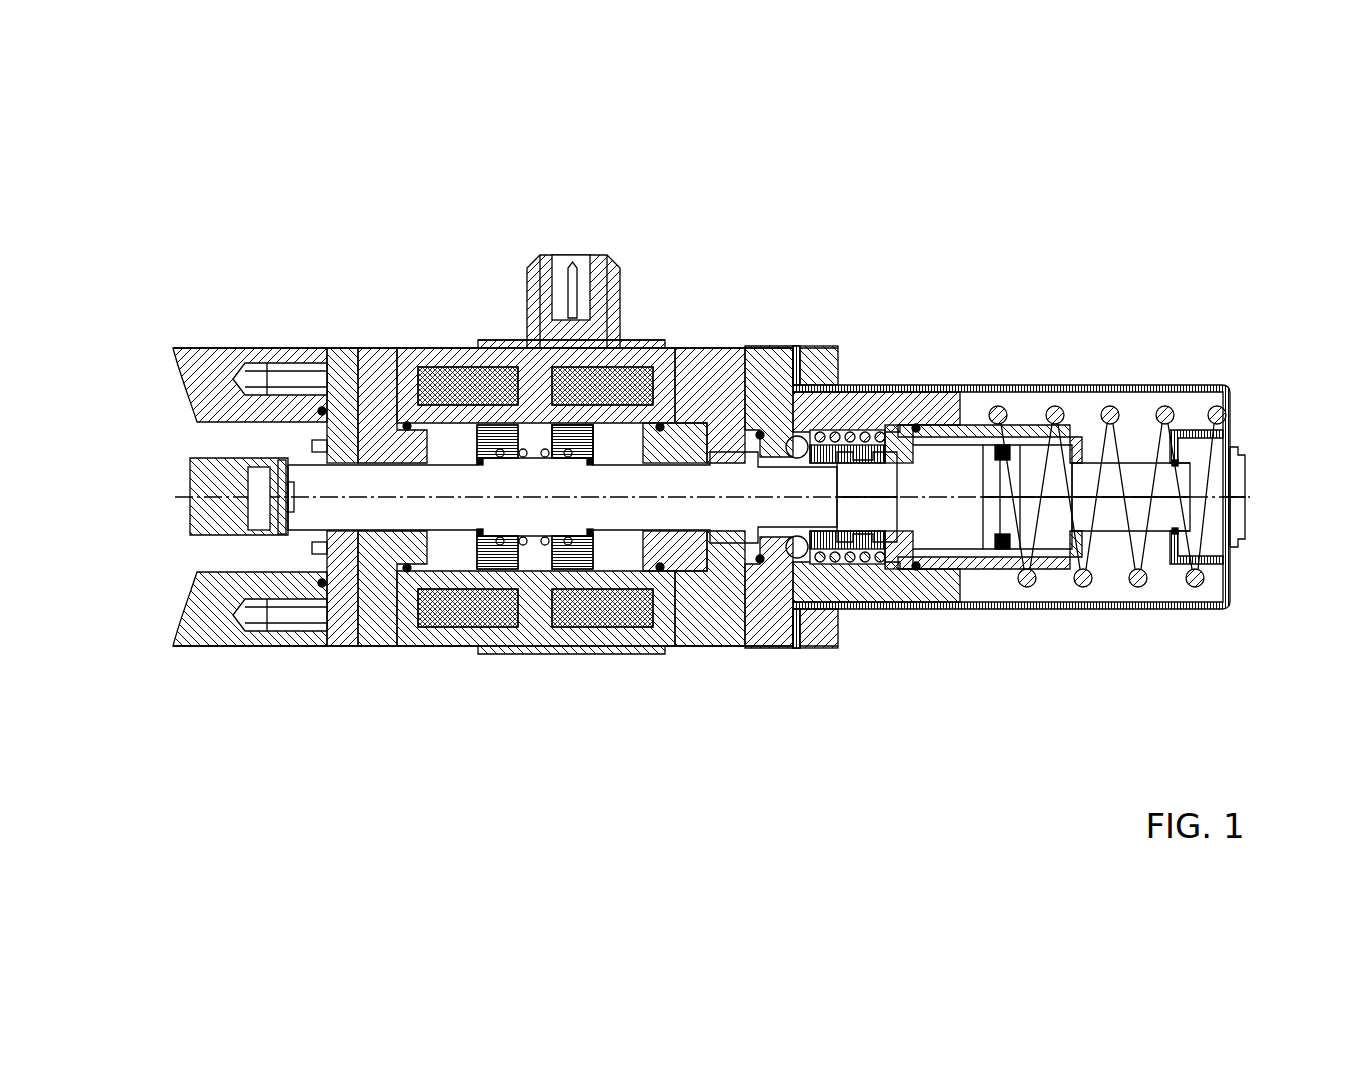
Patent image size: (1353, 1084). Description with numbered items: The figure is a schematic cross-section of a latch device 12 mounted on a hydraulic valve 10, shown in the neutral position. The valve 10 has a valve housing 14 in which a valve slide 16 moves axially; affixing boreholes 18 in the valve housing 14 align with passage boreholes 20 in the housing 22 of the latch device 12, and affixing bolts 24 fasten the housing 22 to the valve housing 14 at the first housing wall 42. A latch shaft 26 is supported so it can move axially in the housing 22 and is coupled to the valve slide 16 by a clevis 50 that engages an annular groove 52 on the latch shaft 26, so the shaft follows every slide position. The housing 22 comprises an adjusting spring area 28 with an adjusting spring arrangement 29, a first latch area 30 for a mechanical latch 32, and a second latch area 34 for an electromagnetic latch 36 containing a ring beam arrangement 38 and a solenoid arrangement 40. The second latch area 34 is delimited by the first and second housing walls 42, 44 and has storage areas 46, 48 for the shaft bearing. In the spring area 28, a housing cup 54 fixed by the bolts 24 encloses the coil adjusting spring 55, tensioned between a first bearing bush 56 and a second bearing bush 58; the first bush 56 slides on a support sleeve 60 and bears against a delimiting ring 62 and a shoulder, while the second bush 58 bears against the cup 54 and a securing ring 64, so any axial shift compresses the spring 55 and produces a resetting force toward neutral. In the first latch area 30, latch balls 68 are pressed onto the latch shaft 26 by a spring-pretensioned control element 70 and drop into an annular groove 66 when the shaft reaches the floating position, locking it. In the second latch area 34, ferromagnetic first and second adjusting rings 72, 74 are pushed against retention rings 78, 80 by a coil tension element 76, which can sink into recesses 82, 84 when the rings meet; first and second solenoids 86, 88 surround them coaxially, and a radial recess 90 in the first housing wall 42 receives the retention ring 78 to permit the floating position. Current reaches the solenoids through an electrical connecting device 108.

The hydraulic valve 10 is at (187, 668).
The latch device 12 is at (695, 304).
The valve housing 14 is at (207, 362).
The valve slide 16 is at (212, 513).
The affixing boreholes 18 is at (246, 364).
The passage boreholes 20 is at (804, 360).
The housing 22 is at (674, 347).
The affixing bolts 24 is at (826, 360).
The latch shaft 26 is at (355, 502).
The adjusting spring area 28 is at (1048, 627).
The adjusting spring arrangement 29 is at (1156, 596).
The first latch area 30 is at (771, 601).
The mechanical latch 32 is at (905, 440).
The second latch area 34 is at (565, 542).
The electromagnetic latch 36 is at (546, 326).
The ring beam arrangement 38 is at (545, 644).
The solenoid arrangement 40 is at (412, 427).
The first housing wall 42 is at (342, 362).
The second housing wall 44 is at (725, 400).
The storage area 46 is at (372, 400).
The storage area 48 is at (668, 440).
The clevis 50 is at (282, 503).
The annular groove 52 is at (290, 535).
The housing cup 54 is at (1210, 388).
The adjusting spring 55 is at (1010, 443).
The first bearing bush 56 is at (1070, 440).
The second bearing bush 58 is at (1246, 545).
The support sleeve 60 is at (1068, 460).
The delimiting ring 62 is at (962, 592).
The securing ring 64 is at (1180, 462).
The annular groove 66 is at (942, 428).
The latch balls 68 is at (802, 444).
The control element 70 is at (867, 487).
The first adjusting ring 72 is at (521, 450).
The second adjusting ring 74 is at (572, 437).
The tension element 76 is at (546, 450).
The retention ring 78 is at (493, 433).
The retention ring 80 is at (597, 436).
The recess 82 is at (504, 542).
The recess 84 is at (640, 612).
The first solenoid 86 is at (468, 612).
The second solenoid 88 is at (673, 627).
The radial recess 90 is at (455, 627).
The electrical connecting device 108 is at (538, 258).